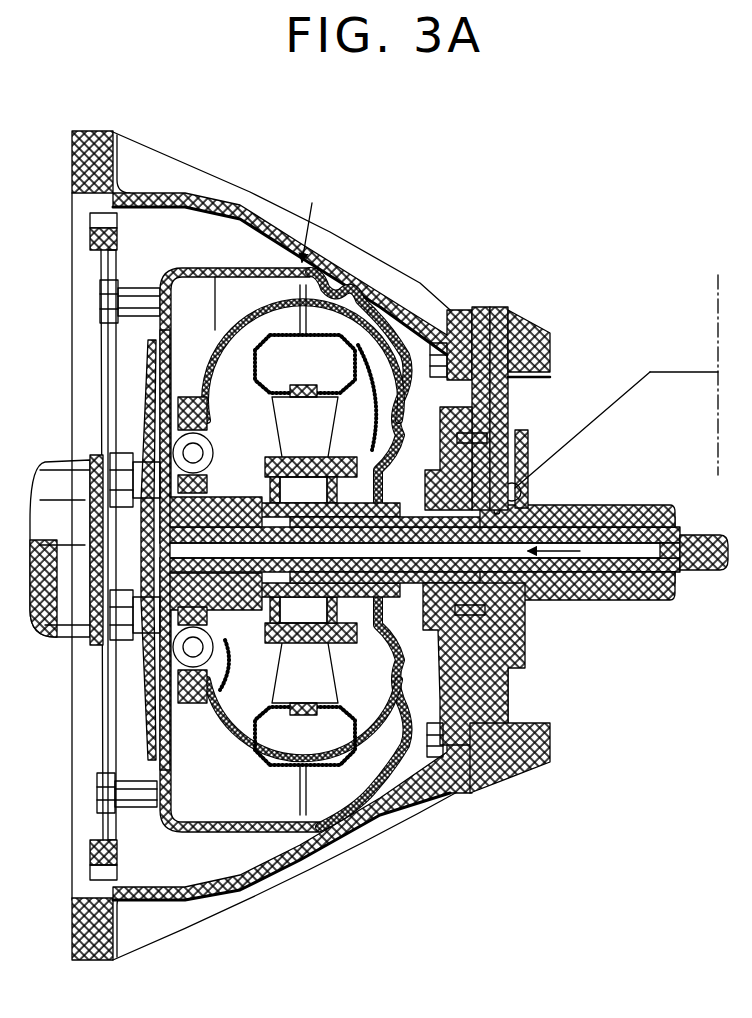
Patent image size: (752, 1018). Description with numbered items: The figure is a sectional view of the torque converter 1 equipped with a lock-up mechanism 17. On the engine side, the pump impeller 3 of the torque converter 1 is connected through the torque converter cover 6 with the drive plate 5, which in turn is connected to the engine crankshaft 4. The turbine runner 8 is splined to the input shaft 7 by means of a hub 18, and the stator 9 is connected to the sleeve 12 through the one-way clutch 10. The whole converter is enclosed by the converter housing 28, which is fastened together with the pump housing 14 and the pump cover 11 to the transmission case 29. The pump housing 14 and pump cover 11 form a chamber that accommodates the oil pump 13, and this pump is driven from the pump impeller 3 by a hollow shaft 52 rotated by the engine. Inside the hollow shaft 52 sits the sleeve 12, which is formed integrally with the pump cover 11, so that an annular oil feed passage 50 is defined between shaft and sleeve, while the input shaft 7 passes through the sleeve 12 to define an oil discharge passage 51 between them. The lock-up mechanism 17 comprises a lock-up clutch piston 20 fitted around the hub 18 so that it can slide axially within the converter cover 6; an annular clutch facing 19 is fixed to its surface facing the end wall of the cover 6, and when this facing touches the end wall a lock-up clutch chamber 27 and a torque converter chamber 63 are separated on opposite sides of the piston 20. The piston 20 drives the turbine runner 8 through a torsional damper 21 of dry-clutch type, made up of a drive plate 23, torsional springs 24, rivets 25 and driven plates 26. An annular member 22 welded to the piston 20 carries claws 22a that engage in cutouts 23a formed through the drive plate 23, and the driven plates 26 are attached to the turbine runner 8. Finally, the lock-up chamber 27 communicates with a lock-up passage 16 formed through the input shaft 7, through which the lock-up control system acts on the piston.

The torque converter 1 is at (514, 341).
The pump impeller 3 is at (345, 300).
The engine crankshaft 4 is at (62, 462).
The drive plate 5 is at (115, 362).
The torque converter cover 6 is at (150, 703).
The input shaft 7 is at (697, 557).
The turbine runner 8 is at (262, 276).
The stator 9 is at (330, 415).
The one-way clutch 10 is at (310, 500).
The pump cover 11 is at (508, 410).
The sleeve 12 is at (398, 600).
The oil pump 13 is at (514, 488).
The pump housing 14 is at (473, 683).
The lock-up passage 16 is at (577, 557).
The lock-up mechanism 17 is at (140, 340).
The hub 18 is at (200, 512).
The clutch facing 19 is at (100, 300).
The lock-up clutch piston 20 is at (160, 386).
The torsional damper 21 is at (178, 477).
The annular member 22 is at (195, 372).
The claws 22a is at (212, 398).
The drive plate 23 is at (165, 468).
The cutouts 23a is at (225, 665).
The torsional springs 24 is at (250, 445).
The rivets 25 is at (170, 647).
The driven plates 26 is at (250, 683).
The lock-up clutch chamber 27 is at (165, 695).
The converter housing 28 is at (397, 840).
The transmission case 29 is at (540, 765).
The oil feed passage 50 is at (380, 515).
The oil discharge passage 51 is at (524, 585).
The hollow shaft 52 is at (404, 495).
The torque converter chamber 63 is at (222, 272).